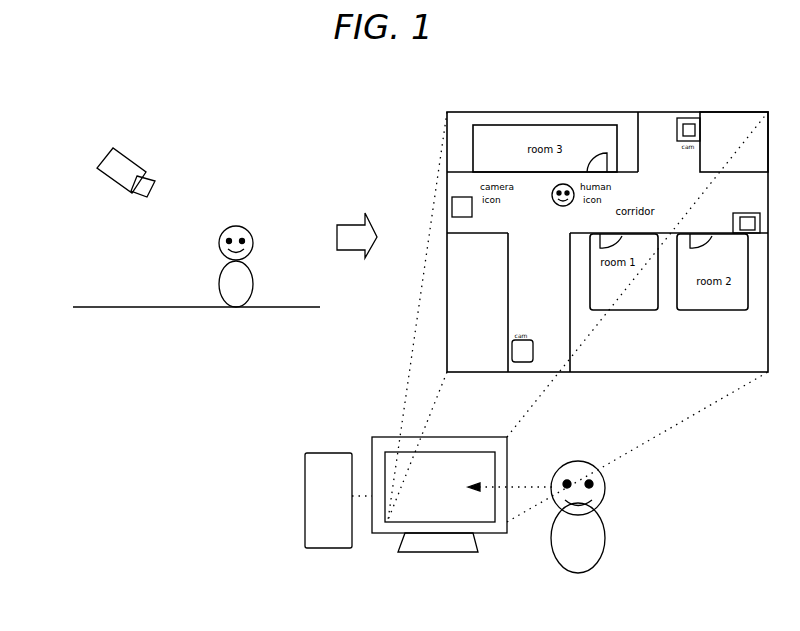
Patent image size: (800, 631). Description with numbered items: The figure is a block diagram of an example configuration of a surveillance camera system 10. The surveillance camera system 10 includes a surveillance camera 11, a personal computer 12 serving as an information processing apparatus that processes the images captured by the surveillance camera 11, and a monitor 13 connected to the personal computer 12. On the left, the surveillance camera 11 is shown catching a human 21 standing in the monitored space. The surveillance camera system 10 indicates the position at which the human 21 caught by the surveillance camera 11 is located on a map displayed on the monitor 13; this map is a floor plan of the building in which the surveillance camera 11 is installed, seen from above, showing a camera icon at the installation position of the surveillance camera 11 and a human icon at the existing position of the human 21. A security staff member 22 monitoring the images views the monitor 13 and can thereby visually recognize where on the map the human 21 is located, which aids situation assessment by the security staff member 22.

The surveillance camera system 10 is at (225, 392).
The surveillance camera 11 is at (121, 167).
The personal computer 12 is at (308, 511).
The monitor 13 is at (438, 512).
The human 21 is at (219, 258).
The security staff member 22 is at (592, 532).